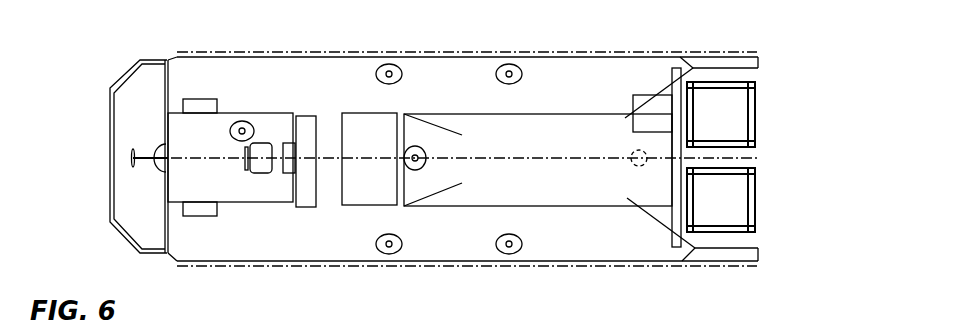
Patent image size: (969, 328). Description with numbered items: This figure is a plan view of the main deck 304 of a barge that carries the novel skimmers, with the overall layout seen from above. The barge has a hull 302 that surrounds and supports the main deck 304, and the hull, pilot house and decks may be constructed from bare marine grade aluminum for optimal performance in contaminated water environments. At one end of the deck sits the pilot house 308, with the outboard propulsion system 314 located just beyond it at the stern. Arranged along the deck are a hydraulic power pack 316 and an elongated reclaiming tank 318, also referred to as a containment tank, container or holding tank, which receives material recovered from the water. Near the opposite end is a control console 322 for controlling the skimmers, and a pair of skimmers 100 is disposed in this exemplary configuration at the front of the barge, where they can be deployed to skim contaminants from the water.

The skimmers 100 is at (733, 120).
The hull 302 is at (501, 57).
The main deck 304 is at (447, 83).
The pilot house 308 is at (278, 122).
The outboard propulsion system 314 is at (156, 148).
The hydraulic power pack 316 is at (365, 118).
The reclaiming tank 318 is at (587, 127).
The control console 322 is at (643, 95).